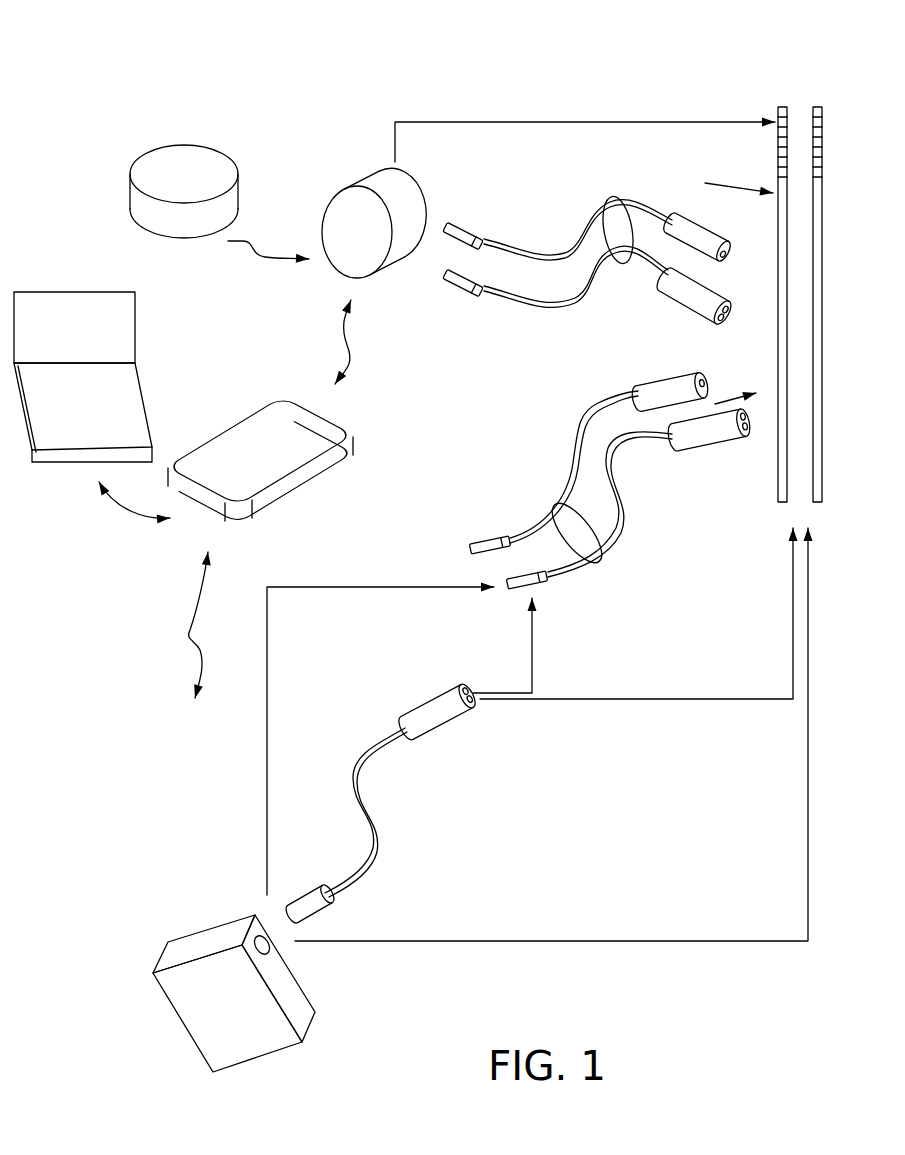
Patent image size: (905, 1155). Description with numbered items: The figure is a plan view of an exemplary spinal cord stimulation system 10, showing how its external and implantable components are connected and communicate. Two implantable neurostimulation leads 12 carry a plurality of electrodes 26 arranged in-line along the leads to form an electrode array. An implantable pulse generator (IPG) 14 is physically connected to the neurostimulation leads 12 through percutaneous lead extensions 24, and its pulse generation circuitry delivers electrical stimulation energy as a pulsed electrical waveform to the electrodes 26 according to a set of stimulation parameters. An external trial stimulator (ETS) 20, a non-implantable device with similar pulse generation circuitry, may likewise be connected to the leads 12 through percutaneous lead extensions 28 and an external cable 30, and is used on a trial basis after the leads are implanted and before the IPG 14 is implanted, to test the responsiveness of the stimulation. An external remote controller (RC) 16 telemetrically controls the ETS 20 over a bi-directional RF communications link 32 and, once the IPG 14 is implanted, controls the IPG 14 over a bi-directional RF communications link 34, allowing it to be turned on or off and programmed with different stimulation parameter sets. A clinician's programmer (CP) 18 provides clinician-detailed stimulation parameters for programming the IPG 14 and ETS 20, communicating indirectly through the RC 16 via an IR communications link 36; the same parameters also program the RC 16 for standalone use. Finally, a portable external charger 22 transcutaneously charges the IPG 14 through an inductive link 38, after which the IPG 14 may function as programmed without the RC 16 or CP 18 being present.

The SCS system 10 is at (560, 64).
The implantable neurostimulation leads 12 is at (799, 104).
The implantable pulse generator (IPG) 14 is at (353, 182).
The external remote controller (RC) 16 is at (273, 405).
The clinician's programmer (CP) 18 is at (58, 305).
The external trial stimulator (ETS) 20 is at (205, 942).
The external charger 22 is at (186, 150).
The percutaneous lead extensions 24 is at (612, 197).
The electrodes 26 is at (787, 146).
The percutaneous lead extensions 28 is at (553, 507).
The external cable 30 is at (378, 740).
The bi-directional RF communications link 32 is at (200, 672).
The bi-directional RF communications link 34 is at (352, 356).
The IR communications link 36 is at (122, 512).
The inductive link 38 is at (243, 242).